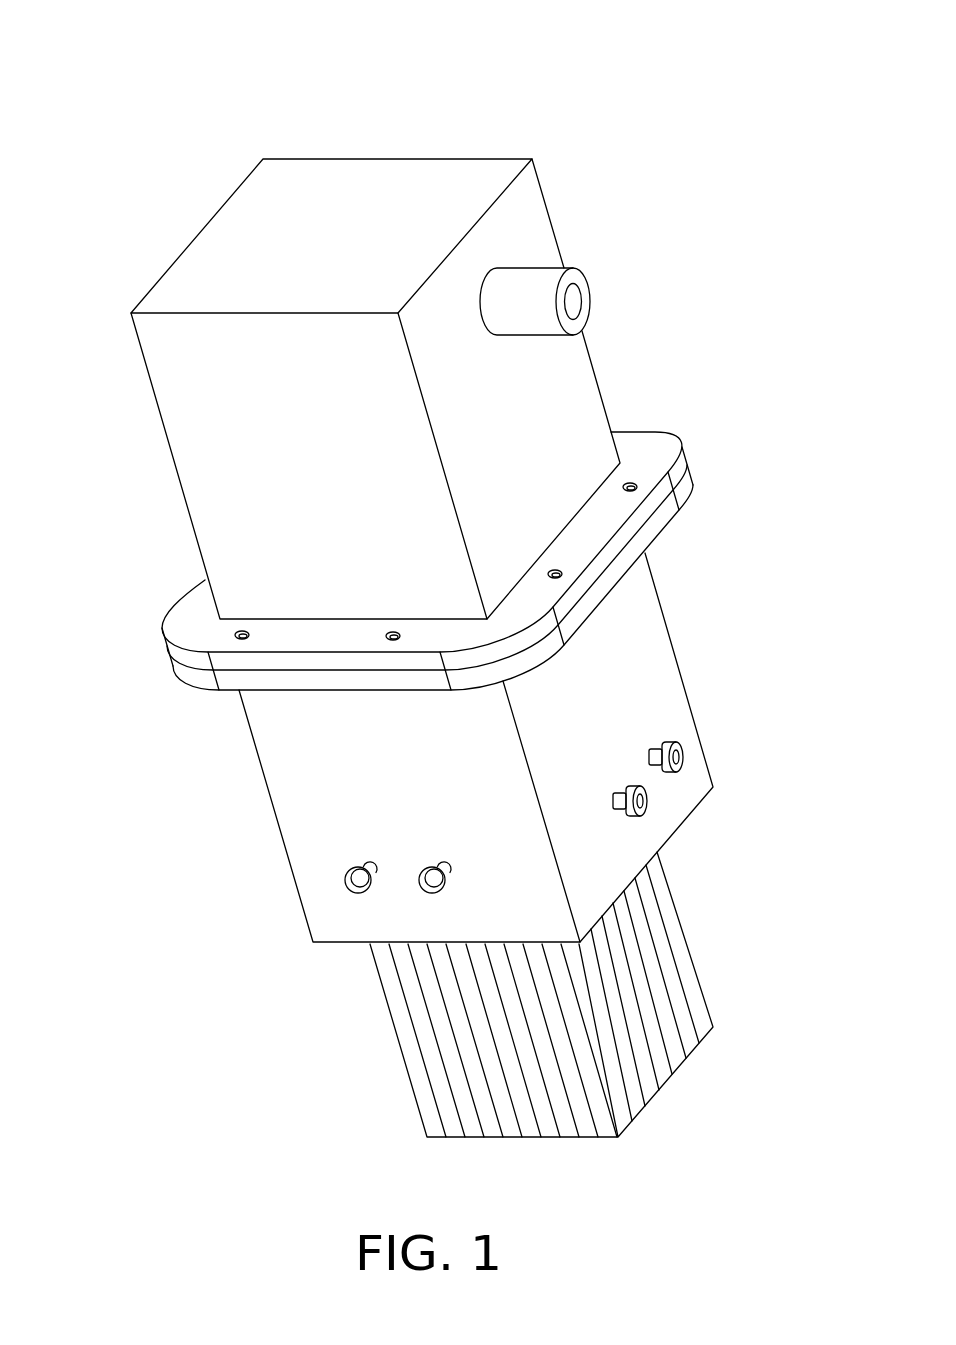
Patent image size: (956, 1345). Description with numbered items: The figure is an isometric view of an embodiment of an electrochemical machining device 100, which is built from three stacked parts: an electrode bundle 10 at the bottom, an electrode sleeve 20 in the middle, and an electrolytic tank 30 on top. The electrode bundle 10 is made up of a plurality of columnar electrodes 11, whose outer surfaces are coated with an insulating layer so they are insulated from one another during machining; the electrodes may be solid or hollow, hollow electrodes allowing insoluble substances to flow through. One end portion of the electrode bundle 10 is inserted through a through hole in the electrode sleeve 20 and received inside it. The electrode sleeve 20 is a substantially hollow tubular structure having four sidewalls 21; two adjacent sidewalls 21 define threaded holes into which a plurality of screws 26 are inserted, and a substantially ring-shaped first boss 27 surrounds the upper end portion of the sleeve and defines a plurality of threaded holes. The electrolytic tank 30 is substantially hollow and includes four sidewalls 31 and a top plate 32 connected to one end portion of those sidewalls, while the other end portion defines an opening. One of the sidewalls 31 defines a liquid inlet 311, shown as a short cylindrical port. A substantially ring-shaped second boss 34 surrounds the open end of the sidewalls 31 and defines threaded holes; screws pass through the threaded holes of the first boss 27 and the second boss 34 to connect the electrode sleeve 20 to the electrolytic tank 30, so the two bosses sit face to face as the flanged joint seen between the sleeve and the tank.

The electrochemical machining device 100 is at (409, 34).
The electrolytic tank 30 is at (205, 196).
The sidewalls 31 is at (178, 378).
The top plate 32 is at (193, 285).
The liquid inlet 311 is at (525, 280).
The second boss 34 is at (190, 610).
The electrode sleeve 20 is at (250, 790).
The sidewalls 21 is at (647, 660).
The first boss 27 is at (648, 533).
The screws 26 is at (647, 802).
The electrode bundle 10 is at (398, 1085).
The columnar electrodes 11 is at (670, 972).